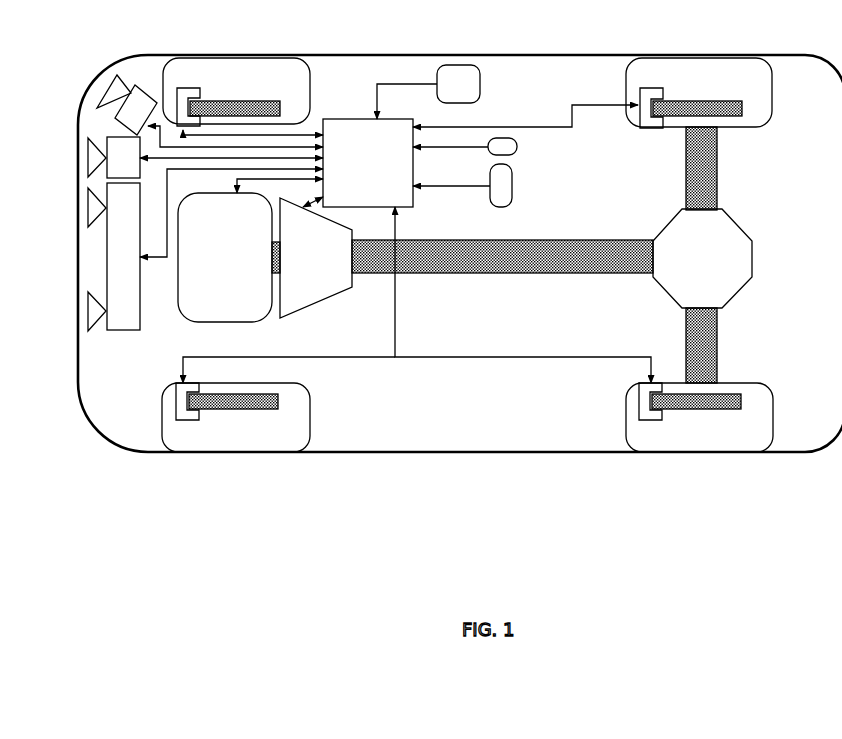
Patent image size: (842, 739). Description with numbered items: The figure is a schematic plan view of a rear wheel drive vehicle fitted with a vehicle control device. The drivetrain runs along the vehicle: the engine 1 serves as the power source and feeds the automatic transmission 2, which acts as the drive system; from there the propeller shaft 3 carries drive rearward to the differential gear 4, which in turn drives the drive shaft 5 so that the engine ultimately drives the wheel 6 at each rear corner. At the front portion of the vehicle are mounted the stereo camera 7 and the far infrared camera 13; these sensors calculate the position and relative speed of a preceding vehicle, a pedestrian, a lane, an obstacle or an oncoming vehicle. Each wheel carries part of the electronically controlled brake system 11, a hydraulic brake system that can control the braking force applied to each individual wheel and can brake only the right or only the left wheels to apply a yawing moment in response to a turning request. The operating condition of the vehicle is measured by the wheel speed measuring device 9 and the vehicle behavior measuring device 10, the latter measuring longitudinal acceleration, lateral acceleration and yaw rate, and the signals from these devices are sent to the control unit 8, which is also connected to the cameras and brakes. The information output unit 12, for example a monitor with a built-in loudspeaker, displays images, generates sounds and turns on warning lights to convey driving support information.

The engine 1 is at (192, 312).
The automatic transmission 2 is at (298, 297).
The propeller shaft 3 is at (422, 268).
The differential gear 4 is at (728, 280).
The drive shaft 5 is at (717, 170).
The wheel 6 is at (709, 74).
The stereo camera 7 is at (115, 297).
The control unit 8 is at (338, 122).
The wheel speed measuring device 9 is at (517, 147).
The vehicle behavior measuring device 10 is at (512, 183).
The electronically controlled brake system 11 is at (188, 88).
The information output unit 12 is at (480, 84).
The far infrared camera 13 is at (135, 87).